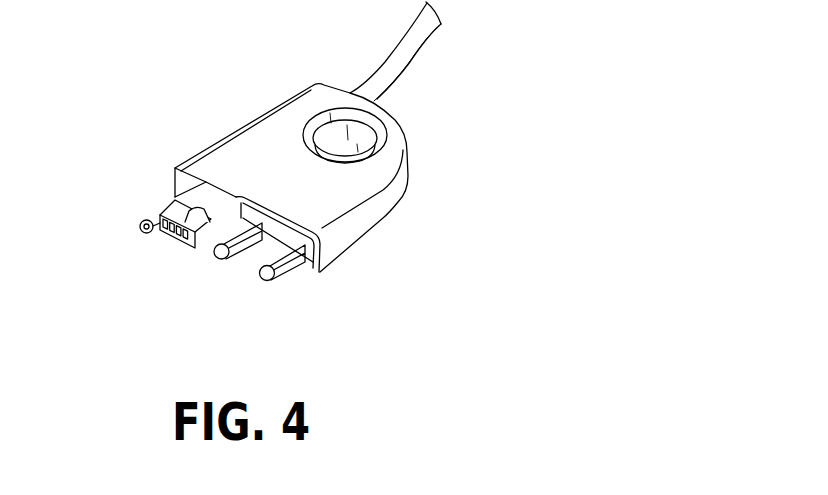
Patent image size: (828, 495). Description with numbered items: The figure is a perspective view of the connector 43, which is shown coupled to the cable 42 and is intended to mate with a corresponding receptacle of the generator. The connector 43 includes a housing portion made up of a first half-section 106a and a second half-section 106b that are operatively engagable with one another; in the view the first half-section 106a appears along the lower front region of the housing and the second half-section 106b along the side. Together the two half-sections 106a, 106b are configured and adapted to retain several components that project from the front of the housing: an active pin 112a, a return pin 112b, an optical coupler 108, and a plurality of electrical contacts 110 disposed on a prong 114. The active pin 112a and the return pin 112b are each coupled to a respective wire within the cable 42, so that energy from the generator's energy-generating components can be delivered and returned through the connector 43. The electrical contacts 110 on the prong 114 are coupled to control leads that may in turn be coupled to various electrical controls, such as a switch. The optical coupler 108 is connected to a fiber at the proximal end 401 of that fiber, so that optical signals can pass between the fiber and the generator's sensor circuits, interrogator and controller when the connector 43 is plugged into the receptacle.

The cable 42 is at (402, 57).
The connector 43 is at (243, 106).
The first half-section 106a is at (363, 238).
The second half-section 106b is at (382, 206).
The optical coupler 108 is at (158, 221).
The electrical contacts 110 is at (165, 233).
The active pin 112a is at (215, 251).
The return pin 112b is at (266, 274).
The prong 114 is at (173, 215).
The proximal end 401 is at (139, 229).